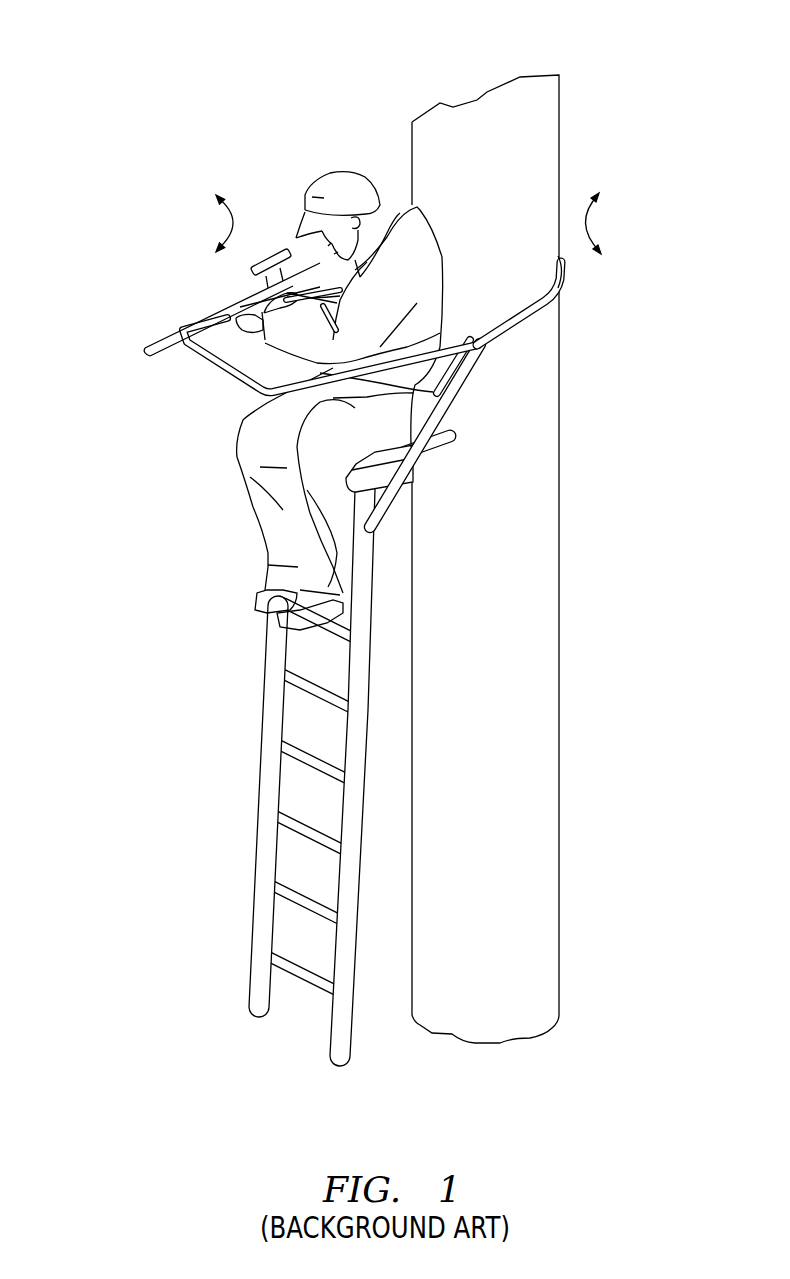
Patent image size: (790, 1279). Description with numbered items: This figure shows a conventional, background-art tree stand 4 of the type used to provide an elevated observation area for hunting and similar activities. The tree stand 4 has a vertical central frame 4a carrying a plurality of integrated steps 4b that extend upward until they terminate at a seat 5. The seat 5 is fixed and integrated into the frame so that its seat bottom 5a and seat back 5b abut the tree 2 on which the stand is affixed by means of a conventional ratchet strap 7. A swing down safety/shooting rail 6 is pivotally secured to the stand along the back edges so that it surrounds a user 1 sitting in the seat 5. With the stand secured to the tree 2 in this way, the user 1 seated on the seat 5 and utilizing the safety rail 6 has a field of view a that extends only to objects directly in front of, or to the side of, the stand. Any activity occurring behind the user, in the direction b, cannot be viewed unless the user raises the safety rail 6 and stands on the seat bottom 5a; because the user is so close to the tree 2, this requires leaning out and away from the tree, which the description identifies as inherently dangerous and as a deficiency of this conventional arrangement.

The user 1 is at (366, 529).
The tree 2 is at (500, 757).
The tree stand 4 is at (230, 529).
The vertical central frame 4a is at (272, 715).
The integrated steps 4b is at (288, 822).
The seat 5 is at (478, 439).
The seat bottom 5a is at (457, 443).
The seat back 5b is at (470, 373).
The swing down safety/shooting rail 6 is at (232, 376).
The ratchet strap 7 is at (553, 303).
The field of view a is at (218, 223).
The area behind the user b is at (603, 223).